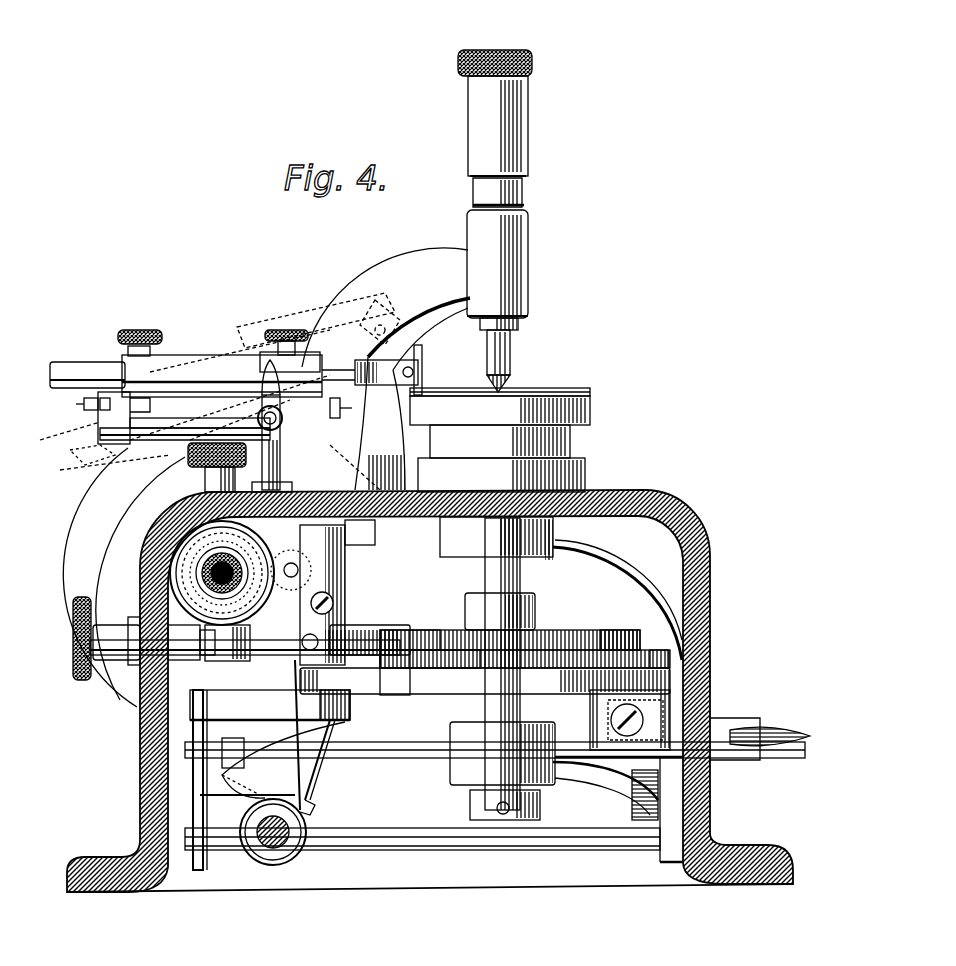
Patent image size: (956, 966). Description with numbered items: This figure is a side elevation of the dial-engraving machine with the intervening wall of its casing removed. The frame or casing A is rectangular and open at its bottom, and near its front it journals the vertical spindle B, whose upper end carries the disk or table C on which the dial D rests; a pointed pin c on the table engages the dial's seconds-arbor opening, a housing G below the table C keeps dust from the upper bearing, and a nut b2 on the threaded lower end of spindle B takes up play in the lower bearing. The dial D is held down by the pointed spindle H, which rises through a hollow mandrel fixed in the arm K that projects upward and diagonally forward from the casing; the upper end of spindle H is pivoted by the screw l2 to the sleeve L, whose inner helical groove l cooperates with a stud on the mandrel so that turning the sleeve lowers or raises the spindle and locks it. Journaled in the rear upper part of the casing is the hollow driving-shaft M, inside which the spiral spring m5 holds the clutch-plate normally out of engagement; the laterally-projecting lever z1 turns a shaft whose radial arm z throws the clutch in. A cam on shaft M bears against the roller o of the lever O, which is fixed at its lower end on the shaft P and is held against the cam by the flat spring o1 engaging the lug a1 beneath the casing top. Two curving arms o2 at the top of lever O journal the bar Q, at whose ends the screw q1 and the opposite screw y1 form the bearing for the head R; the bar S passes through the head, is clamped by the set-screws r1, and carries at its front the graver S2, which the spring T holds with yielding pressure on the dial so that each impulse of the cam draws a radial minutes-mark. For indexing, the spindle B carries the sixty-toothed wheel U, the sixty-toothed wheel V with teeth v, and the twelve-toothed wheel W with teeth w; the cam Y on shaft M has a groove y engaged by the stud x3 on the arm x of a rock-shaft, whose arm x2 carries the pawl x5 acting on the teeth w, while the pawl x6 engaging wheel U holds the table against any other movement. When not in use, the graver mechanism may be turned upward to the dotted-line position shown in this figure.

The frame or casing A is at (690, 513).
The spindle B is at (520, 578).
The disk or table C is at (500, 410).
The dial D is at (520, 390).
The housing G is at (501, 458).
The pointed spindle H is at (510, 355).
The arm K is at (415, 350).
The sleeve L is at (473, 191).
The helical groove l is at (520, 325).
The pivotal screw l2 is at (496, 50).
The hollow shaft M is at (222, 573).
The spiral spring m5 is at (235, 576).
The cam Y is at (222, 572).
The lever O is at (270, 765).
The roller o is at (313, 595).
The flat spring o1 is at (305, 778).
The curving arms o2 is at (275, 426).
The lug a1 is at (375, 531).
The pointed pin c is at (291, 570).
The shaft P is at (292, 828).
The bar Q is at (200, 413).
The screw q1 is at (342, 404).
The head R is at (222, 369).
The set-screws r1 is at (213, 327).
The bar S is at (82, 372).
The graver S2 is at (420, 356).
The spring T is at (155, 457).
The wheel U is at (430, 688).
The second smaller wheel V is at (645, 650).
The teeth v is at (430, 659).
The third wheel W is at (540, 632).
The teeth w is at (615, 630).
The arm x is at (236, 625).
The arm x2 is at (370, 625).
The stud x3 is at (300, 636).
The spring-pawl x5 is at (430, 632).
The spring-pawl x6 is at (485, 676).
The groove y is at (126, 405).
The screw bracket y1 is at (97, 416).
The radial arm z is at (495, 757).
The laterally-projecting lever z1 is at (775, 732).
The nut b2 is at (480, 812).